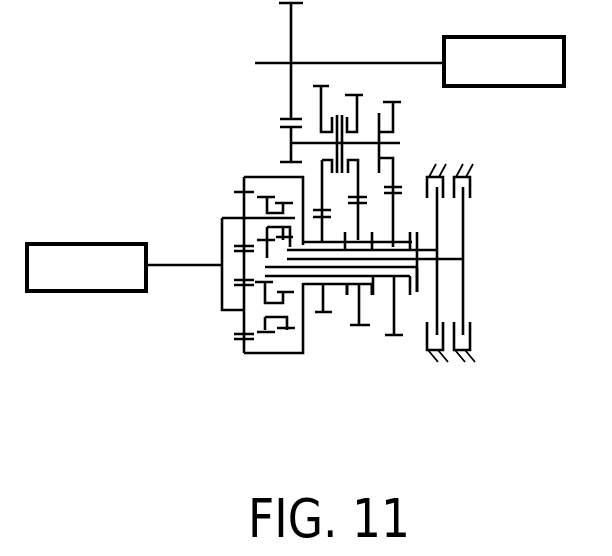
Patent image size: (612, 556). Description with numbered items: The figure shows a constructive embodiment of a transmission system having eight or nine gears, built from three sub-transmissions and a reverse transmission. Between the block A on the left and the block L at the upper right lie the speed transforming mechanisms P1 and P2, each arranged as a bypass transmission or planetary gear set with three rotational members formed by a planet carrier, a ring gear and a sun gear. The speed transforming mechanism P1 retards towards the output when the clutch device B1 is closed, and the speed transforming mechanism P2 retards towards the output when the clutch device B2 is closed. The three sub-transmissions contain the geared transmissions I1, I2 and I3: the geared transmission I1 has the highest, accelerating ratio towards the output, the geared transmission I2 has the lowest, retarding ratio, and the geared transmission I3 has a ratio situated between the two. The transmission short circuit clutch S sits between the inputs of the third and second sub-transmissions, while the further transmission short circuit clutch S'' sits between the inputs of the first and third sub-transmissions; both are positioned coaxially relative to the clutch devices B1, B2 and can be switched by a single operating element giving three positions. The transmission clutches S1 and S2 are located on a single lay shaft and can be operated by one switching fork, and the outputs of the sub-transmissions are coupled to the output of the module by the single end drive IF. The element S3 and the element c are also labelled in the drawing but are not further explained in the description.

The drive/input unit A is at (124, 267).
The load / output unit L is at (504, 61).
The end drive IF is at (343, 82).
The transmission clutch S1 is at (383, 100).
The transmission clutch S2 is at (335, 100).
The clutch S3 is at (344, 100).
The speed transforming mechanism P1 is at (279, 335).
The speed transforming mechanism P2 is at (235, 320).
The geared transmission I1 is at (391, 321).
The geared transmission I2 is at (323, 319).
The geared transmission I3 is at (359, 324).
The transmission short circuit clutch S is at (340, 349).
The further transmission short circuit clutch S'' is at (368, 349).
The carrier c is at (414, 298).
The clutch device B1 is at (437, 288).
The clutch device B2 is at (481, 288).